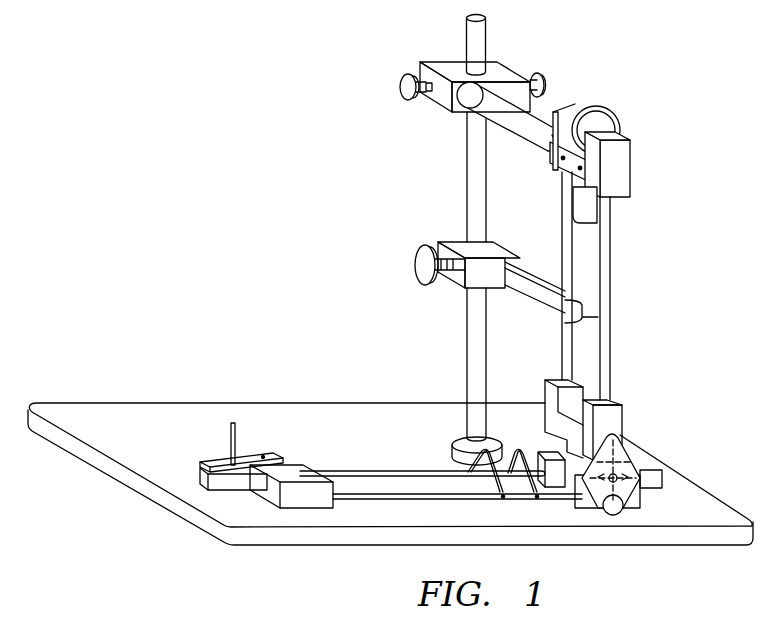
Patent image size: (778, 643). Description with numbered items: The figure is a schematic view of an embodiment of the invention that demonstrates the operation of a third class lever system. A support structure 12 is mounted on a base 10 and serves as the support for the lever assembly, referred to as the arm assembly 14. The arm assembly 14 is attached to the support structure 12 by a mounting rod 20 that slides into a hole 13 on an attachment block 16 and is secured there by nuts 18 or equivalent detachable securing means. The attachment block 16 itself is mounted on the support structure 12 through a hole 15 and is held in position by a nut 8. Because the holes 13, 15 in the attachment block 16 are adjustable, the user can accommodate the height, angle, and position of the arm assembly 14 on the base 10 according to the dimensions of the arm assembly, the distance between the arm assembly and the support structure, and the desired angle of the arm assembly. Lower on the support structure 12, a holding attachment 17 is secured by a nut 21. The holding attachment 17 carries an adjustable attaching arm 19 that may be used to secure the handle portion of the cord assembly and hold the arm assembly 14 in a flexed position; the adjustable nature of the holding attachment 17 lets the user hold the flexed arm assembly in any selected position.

The nut 8 is at (552, 85).
The base 10 is at (220, 532).
The support structure 12 is at (485, 37).
The hole 13 is at (455, 113).
The arm assembly 14 is at (646, 164).
The hole 15 is at (463, 69).
The attachment block 16 is at (440, 67).
The holding attachment 17 is at (492, 282).
The nuts 18 is at (405, 101).
The adjustable attaching arm 19 is at (522, 280).
The mounting rod 20 is at (520, 127).
The nut 21 is at (415, 273).